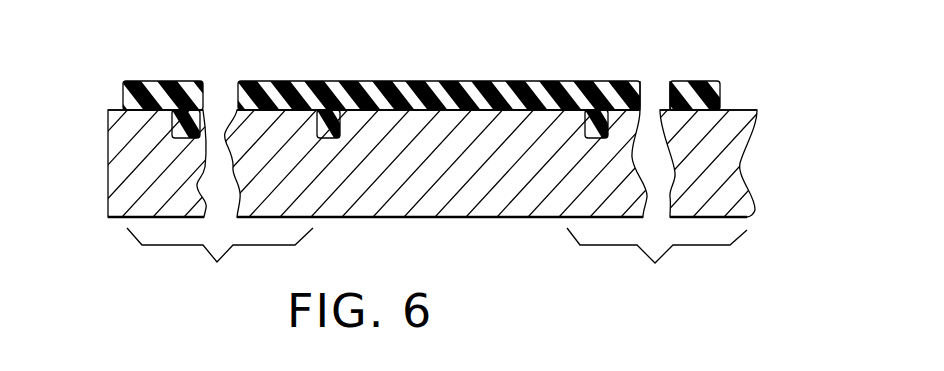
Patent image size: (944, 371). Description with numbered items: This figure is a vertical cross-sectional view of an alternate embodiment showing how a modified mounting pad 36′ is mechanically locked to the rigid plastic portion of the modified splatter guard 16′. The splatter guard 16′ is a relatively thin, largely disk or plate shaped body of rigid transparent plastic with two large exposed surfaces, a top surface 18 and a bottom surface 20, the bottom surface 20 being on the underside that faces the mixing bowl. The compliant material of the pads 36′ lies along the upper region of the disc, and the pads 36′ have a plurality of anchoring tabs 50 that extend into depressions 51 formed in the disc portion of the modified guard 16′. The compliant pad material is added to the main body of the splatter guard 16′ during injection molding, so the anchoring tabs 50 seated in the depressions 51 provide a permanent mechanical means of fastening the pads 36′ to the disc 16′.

The modified splatter guard 16′ is at (115, 168).
The top surface 18 is at (117, 220).
The bottom surface 20 is at (111, 108).
The anchoring tabs 50 is at (181, 108).
The depression 51 is at (392, 104).
The modified mounting pad 36′ is at (687, 88).